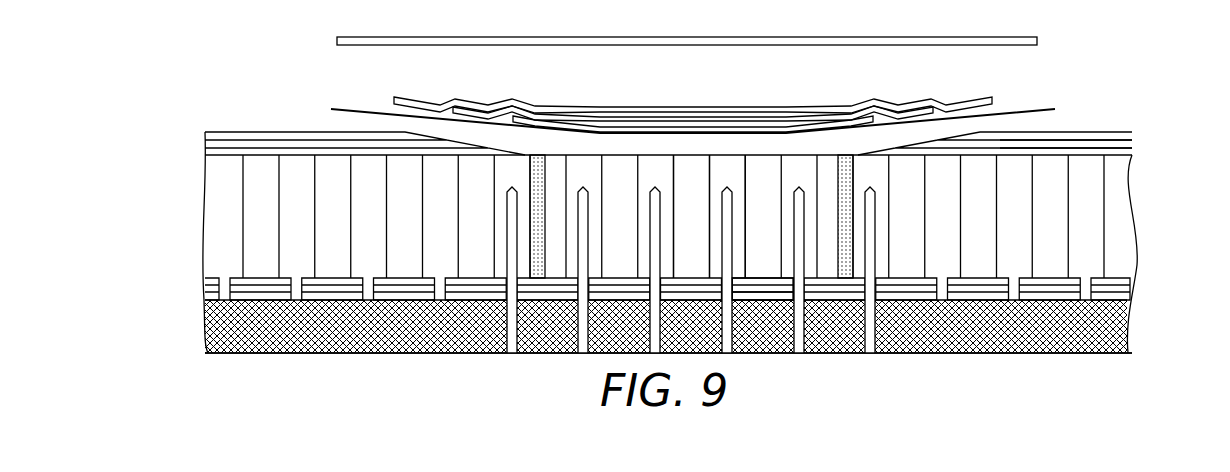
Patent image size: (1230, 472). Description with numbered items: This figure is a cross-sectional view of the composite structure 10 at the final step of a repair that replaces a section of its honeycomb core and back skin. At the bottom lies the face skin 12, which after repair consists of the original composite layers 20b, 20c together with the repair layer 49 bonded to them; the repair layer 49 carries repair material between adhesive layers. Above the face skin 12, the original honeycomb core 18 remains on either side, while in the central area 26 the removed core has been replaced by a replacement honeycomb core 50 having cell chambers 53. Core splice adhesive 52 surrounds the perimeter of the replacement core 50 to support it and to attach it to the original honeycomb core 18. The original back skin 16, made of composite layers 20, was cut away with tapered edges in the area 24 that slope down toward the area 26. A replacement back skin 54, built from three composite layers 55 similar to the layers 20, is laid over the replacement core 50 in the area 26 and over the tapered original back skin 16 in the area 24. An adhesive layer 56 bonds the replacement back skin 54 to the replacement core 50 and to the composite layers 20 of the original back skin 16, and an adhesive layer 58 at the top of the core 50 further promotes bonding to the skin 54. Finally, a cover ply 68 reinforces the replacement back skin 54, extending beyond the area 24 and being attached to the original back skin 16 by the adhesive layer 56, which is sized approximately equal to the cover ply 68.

The composite structure 10 is at (1092, 55).
The face skin 12 is at (1158, 292).
The back skin 16 is at (1158, 148).
The honeycomb core 18 is at (1158, 225).
The composite layers 20 is at (1086, 143).
The original composite layer 20b is at (772, 290).
The original composite layer 20c is at (741, 300).
The area 24 is at (484, 124).
The area 26 is at (652, 133).
The repair layer 49 is at (757, 280).
The replacement honeycomb core 50 is at (692, 162).
The core splice adhesive 52 is at (540, 156).
The cell chambers 53 is at (598, 178).
The replacement back skin 54 is at (1009, 95).
The composite layers 55 is at (774, 130).
The adhesive layer 56 is at (357, 111).
The adhesive layer 58 is at (752, 152).
The cover ply 68 is at (927, 43).